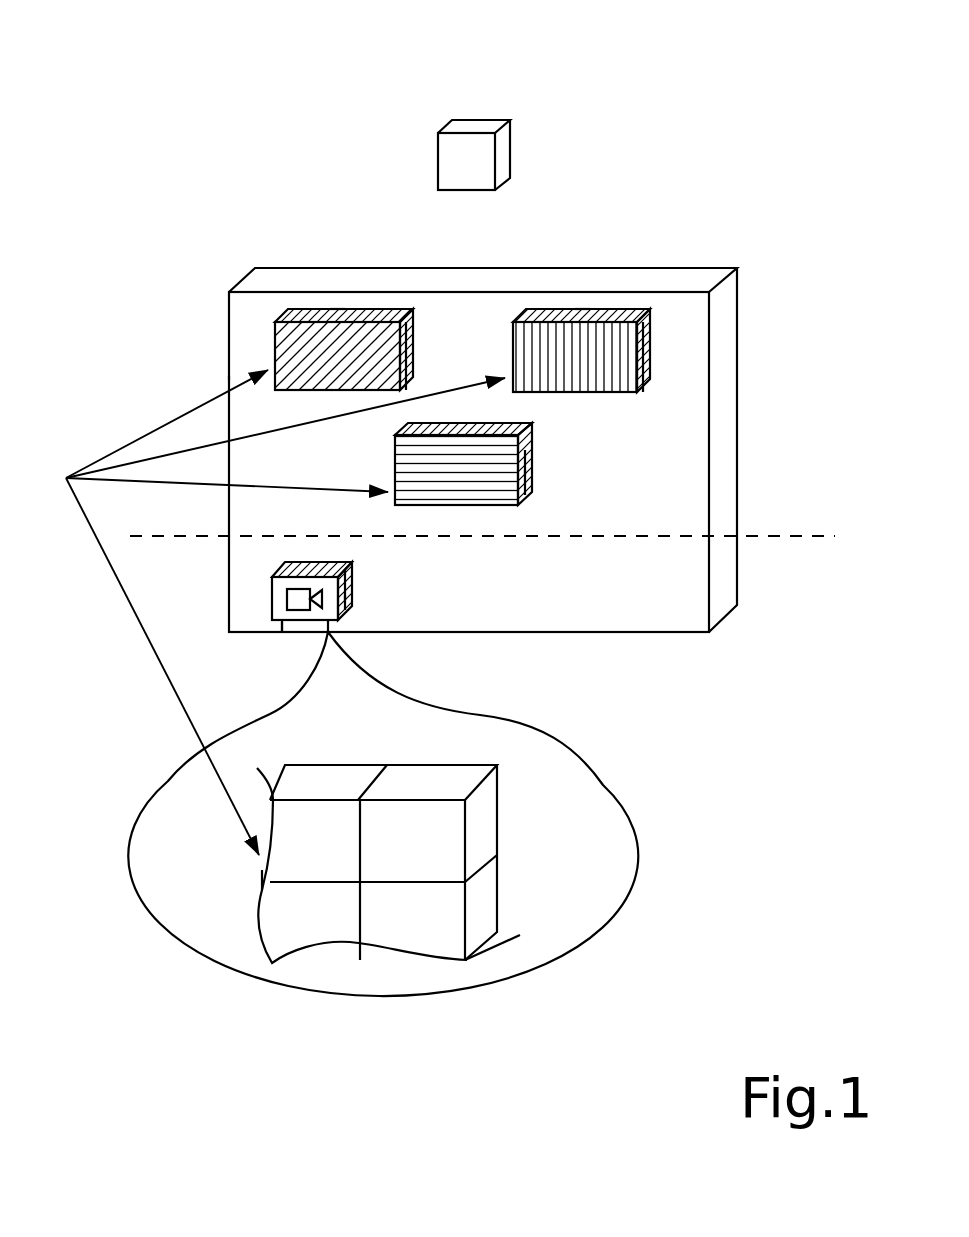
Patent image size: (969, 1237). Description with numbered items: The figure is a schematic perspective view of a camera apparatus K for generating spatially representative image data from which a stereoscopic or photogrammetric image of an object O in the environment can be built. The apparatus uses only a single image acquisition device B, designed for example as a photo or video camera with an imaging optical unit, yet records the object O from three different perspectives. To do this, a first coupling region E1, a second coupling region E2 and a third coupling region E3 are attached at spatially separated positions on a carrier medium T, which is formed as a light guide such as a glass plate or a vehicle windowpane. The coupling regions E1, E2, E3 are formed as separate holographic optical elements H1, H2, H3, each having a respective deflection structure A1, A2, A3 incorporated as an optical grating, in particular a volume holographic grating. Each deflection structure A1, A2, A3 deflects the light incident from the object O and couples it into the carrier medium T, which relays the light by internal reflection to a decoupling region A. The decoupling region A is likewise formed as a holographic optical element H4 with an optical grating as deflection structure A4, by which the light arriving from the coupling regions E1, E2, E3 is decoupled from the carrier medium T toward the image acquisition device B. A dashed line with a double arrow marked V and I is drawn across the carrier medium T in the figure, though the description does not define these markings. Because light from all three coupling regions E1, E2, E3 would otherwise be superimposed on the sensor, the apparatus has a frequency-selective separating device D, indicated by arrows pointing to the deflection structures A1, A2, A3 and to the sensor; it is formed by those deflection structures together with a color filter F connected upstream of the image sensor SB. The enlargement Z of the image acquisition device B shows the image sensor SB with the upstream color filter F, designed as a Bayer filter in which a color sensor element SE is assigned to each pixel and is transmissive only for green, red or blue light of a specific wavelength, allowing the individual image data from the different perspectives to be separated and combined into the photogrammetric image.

The object O is at (478, 128).
The camera apparatus K is at (752, 246).
The carrier medium T is at (228, 378).
The visible light region V is at (805, 545).
The infrared region I is at (805, 536).
The deflection structure A1 is at (298, 347).
The first coupling region E1 is at (340, 312).
The holographic optical element H1 is at (418, 323).
The deflection structure A2 is at (524, 347).
The second coupling region E2 is at (583, 318).
The holographic optical element H2 is at (657, 329).
The deflection structure A3 is at (414, 472).
The third coupling region E3 is at (523, 462).
The holographic optical element H3 is at (541, 481).
The decoupling region A is at (300, 570).
The deflection structure A4 is at (350, 594).
The holographic optical element H4 is at (358, 606).
The image acquisition device B is at (282, 631).
The separating device D is at (273, 612).
The enlargement Z is at (637, 852).
The image sensor SB is at (500, 823).
The color filter F is at (412, 962).
The color sensor element SE is at (257, 880).